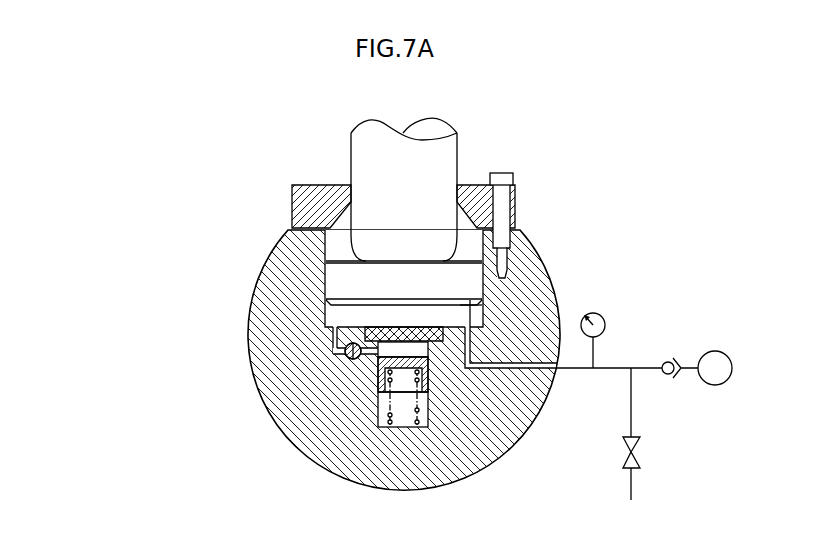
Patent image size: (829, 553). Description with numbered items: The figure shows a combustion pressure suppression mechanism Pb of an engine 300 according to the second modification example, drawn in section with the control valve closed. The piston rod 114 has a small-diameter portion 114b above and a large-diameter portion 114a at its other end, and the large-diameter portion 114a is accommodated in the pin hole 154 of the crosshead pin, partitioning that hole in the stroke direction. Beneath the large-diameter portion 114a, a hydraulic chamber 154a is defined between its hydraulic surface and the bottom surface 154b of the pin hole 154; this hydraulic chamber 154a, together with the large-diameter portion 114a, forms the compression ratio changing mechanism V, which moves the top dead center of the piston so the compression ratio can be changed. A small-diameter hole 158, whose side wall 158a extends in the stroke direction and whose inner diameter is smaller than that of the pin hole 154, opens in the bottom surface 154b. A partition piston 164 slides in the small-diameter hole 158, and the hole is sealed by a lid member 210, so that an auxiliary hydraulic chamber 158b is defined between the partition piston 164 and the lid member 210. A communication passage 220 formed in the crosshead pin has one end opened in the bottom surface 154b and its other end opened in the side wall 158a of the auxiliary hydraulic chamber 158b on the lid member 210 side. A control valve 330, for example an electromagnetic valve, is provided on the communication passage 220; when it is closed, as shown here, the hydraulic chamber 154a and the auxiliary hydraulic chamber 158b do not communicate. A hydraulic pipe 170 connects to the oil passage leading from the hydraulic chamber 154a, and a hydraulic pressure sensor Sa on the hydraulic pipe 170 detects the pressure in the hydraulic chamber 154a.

The engine 300 is at (641, 129).
The piston rod 114 is at (350, 136).
The large-diameter portion 114a is at (360, 262).
The small-diameter portion 114b is at (390, 155).
The pin hole 154 is at (330, 306).
The hydraulic chamber 154a is at (470, 322).
The bottom surface 154b is at (468, 322).
The small-diameter hole 158 is at (430, 428).
The side wall 158a is at (430, 412).
The auxiliary hydraulic chamber 158b is at (380, 355).
The partition piston 164 is at (380, 380).
The hydraulic pipe 170 is at (627, 366).
The lid member 210 is at (370, 352).
The communication passage 220 is at (336, 352).
The control valve 330 is at (354, 359).
The combustion pressure suppression mechanism Pb is at (256, 251).
The hydraulic pressure sensor Sa is at (594, 313).
The compression ratio changing mechanism V is at (698, 318).